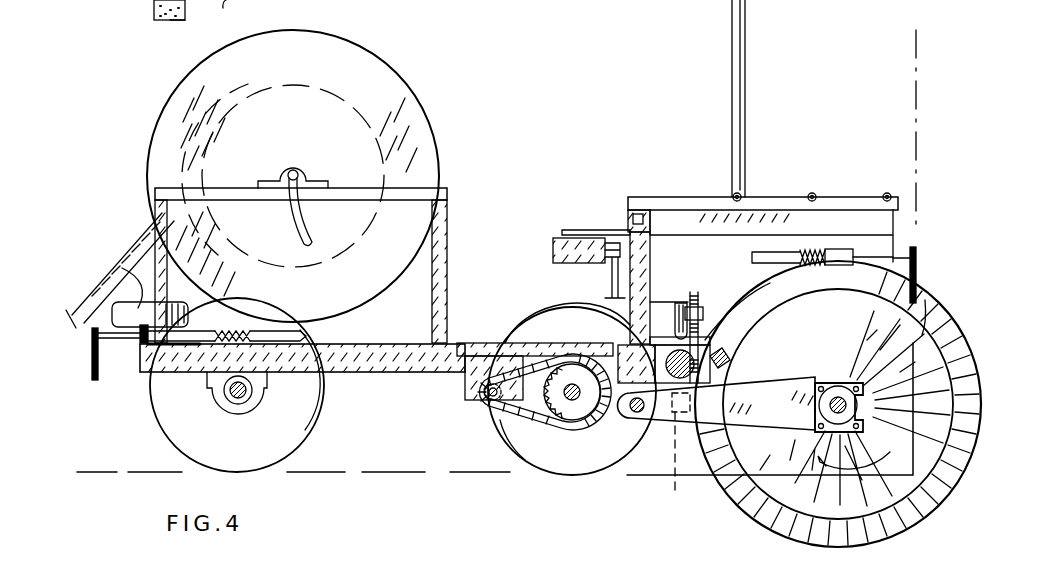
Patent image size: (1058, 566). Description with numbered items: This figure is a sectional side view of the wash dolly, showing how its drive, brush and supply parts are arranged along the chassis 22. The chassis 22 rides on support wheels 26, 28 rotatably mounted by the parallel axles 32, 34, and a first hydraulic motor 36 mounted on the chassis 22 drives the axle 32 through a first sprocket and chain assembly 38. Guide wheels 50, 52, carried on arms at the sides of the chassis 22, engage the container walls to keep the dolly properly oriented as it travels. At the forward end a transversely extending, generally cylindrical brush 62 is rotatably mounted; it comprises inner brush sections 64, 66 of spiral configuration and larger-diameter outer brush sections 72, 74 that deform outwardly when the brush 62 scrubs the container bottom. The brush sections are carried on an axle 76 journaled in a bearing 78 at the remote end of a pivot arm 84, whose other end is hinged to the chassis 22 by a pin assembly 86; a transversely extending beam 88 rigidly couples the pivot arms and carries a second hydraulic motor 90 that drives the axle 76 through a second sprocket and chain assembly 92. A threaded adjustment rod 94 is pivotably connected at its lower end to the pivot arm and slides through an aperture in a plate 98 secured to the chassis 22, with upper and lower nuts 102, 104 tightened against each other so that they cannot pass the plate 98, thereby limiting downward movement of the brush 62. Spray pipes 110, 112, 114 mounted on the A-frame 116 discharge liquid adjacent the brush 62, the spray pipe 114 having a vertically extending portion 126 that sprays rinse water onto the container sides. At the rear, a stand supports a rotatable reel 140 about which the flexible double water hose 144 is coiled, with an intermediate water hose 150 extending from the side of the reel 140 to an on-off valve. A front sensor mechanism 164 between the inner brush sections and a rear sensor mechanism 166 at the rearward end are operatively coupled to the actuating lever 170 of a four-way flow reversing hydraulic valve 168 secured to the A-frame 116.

The chassis 22 is at (345, 372).
The support wheel 26 is at (160, 400).
The support wheel 28 is at (516, 448).
The axle 32 is at (575, 402).
The axle 34 is at (226, 396).
The first hydraulic motor 36 is at (482, 412).
The first sprocket and chain assembly 38 is at (528, 421).
The guide wheel 50 is at (122, 268).
The guide wheel 52 is at (623, 313).
The brush 62 is at (950, 516).
The inner brush section 64 is at (193, 18).
The inner brush section 66 is at (932, 335).
The outer brush section 72 is at (160, 22).
The outer brush section 74 is at (925, 300).
The axle 76 is at (836, 398).
The bearing 78 is at (830, 428).
The pivot arm 84 is at (803, 414).
The pin assembly 86 is at (637, 416).
The beam 88 is at (674, 454).
The second hydraulic motor 90 is at (692, 366).
The second sprocket and chain assembly 92 is at (728, 356).
The threaded adjustment rod 94 is at (722, 341).
The plate 98 is at (684, 337).
The upper nut 102 is at (699, 292).
The lower nut 104 is at (710, 338).
The spray pipe 110 is at (885, 193).
The spray pipe 112 is at (810, 193).
The spray pipe 114 is at (733, 194).
The A-frame 116 is at (700, 212).
The vertically extending portion 126 is at (730, 57).
The reel 140 is at (317, 65).
The flexible double water hose 144 is at (140, 252).
The intermediate water hose 150 is at (292, 214).
The front sensor mechanism 164 is at (922, 238).
The rear sensor mechanism 166 is at (85, 372).
The four-way flow reversing hydraulic valve 168 is at (551, 248).
The actuating lever 170 is at (612, 274).